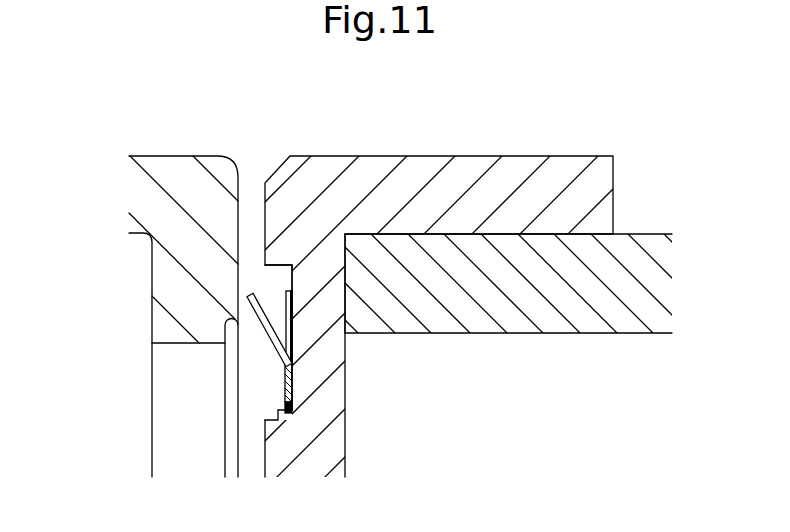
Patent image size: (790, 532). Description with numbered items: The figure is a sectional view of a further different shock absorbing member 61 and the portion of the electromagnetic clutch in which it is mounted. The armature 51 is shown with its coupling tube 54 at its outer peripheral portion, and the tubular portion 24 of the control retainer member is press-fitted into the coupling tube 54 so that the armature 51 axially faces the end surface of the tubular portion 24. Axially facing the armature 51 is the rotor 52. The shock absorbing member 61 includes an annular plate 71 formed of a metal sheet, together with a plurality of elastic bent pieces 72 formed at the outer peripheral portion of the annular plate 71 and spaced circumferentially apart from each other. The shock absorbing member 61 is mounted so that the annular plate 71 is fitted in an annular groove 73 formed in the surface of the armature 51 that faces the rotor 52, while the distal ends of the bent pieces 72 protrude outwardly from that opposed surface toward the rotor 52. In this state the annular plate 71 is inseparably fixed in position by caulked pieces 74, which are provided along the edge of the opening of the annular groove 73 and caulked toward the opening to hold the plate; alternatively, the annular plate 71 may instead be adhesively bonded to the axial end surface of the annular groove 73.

The tubular portion 24 is at (638, 265).
The armature 51 is at (328, 402).
The rotor 52 is at (183, 186).
The coupling tube 54 is at (423, 172).
The shock absorbing member 61 is at (283, 292).
The annular plate 71 is at (287, 383).
The elastic bent pieces 72 is at (259, 318).
The annular groove 73 is at (285, 266).
The caulked pieces 74 is at (280, 409).